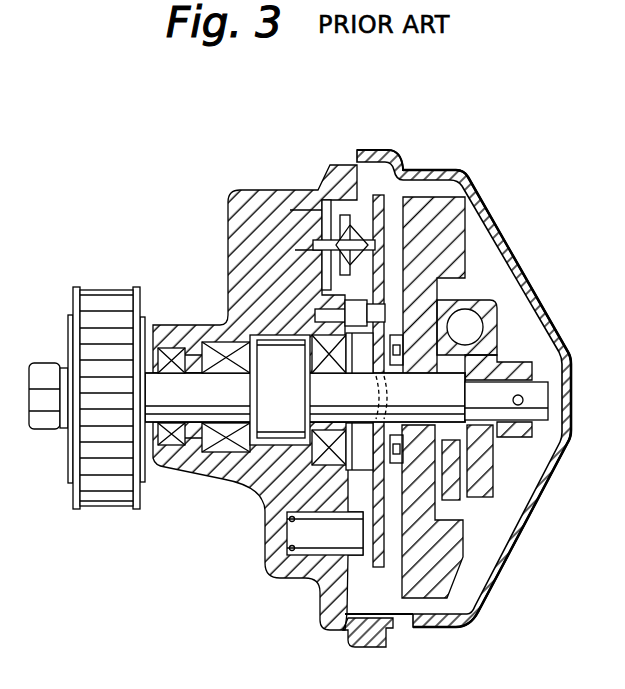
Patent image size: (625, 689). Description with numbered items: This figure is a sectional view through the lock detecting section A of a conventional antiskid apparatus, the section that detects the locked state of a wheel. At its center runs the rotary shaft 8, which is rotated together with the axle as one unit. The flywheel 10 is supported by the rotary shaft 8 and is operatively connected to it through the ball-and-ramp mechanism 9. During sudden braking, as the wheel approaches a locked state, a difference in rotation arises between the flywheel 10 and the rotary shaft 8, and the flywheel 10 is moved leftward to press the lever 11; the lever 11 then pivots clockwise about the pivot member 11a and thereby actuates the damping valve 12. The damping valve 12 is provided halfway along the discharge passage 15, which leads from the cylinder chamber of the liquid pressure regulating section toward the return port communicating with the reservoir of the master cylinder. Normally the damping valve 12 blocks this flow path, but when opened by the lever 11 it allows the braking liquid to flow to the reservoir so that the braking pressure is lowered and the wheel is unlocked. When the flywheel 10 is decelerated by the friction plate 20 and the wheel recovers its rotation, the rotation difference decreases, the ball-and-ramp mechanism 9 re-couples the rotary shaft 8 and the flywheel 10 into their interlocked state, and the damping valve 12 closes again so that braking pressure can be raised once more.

The rotary shaft 8 is at (152, 376).
The ball-and-ramp mechanism 9 is at (476, 299).
The flywheel 10 is at (414, 200).
The lever 11 is at (322, 607).
The pivot member 11a is at (456, 232).
The damping valve 12 is at (323, 207).
The discharge passage 15 is at (291, 245).
The friction plate 20 is at (440, 503).
The lock detecting section A is at (511, 231).